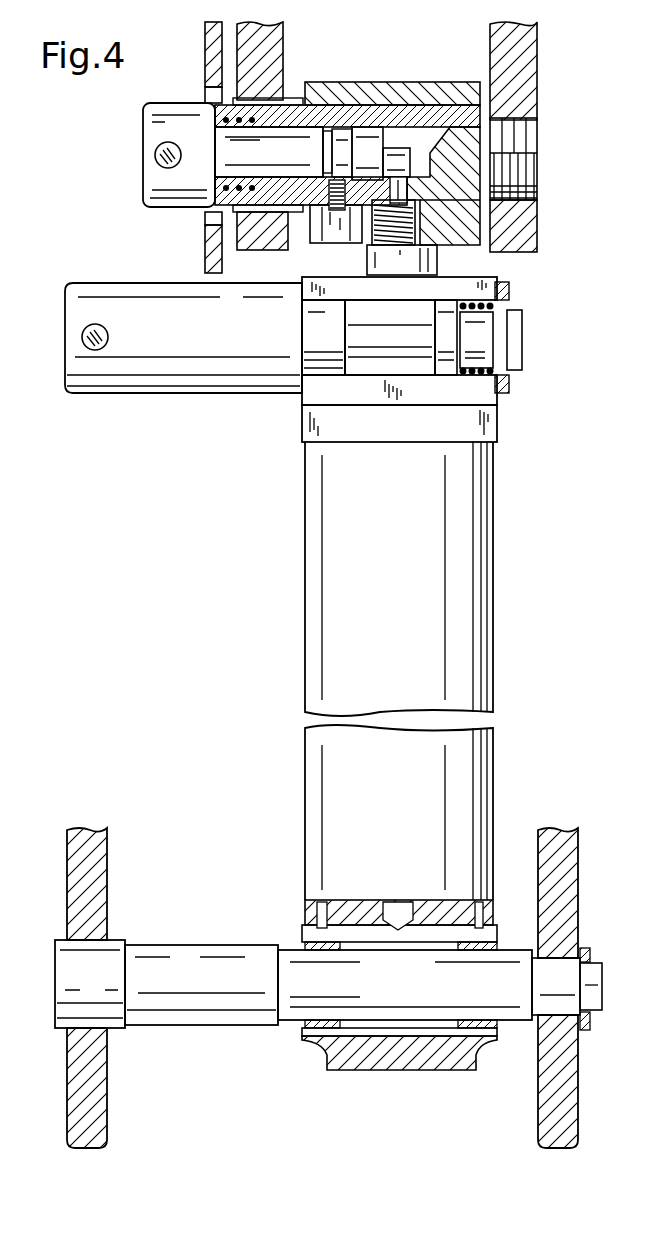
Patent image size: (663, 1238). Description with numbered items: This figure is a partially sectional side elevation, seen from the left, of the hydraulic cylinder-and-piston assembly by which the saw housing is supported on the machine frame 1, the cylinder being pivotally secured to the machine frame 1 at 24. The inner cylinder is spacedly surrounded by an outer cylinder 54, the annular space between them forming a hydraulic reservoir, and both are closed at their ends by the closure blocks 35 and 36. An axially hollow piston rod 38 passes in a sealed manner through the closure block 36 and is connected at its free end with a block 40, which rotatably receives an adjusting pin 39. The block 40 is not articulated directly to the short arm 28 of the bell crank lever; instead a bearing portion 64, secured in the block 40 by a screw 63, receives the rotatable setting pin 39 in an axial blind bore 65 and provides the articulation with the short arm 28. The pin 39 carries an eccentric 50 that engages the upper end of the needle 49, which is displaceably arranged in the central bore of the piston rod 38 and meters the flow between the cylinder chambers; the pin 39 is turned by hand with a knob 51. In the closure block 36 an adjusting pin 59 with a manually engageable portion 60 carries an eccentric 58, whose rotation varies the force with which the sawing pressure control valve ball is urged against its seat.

The machine frame 1 is at (104, 1097).
The pivot of the cylinder 24 is at (504, 968).
The short arm 28 is at (247, 52).
The closure block 35 is at (372, 1062).
The closure block 36 is at (490, 430).
The piston rod 38 is at (400, 250).
The adjusting pin 39 is at (290, 133).
The block 40 is at (345, 88).
The needle 49 is at (348, 244).
The eccentric 50 is at (397, 147).
The knob 51 is at (160, 130).
The outer cylinder 54 is at (470, 628).
The eccentric 58 is at (380, 345).
The adjusting pin 59 is at (323, 380).
The manually engageable portion 60 is at (187, 375).
The screw 63 is at (332, 243).
The bearing portion 64 is at (460, 205).
The axial blind bore 65 is at (434, 157).